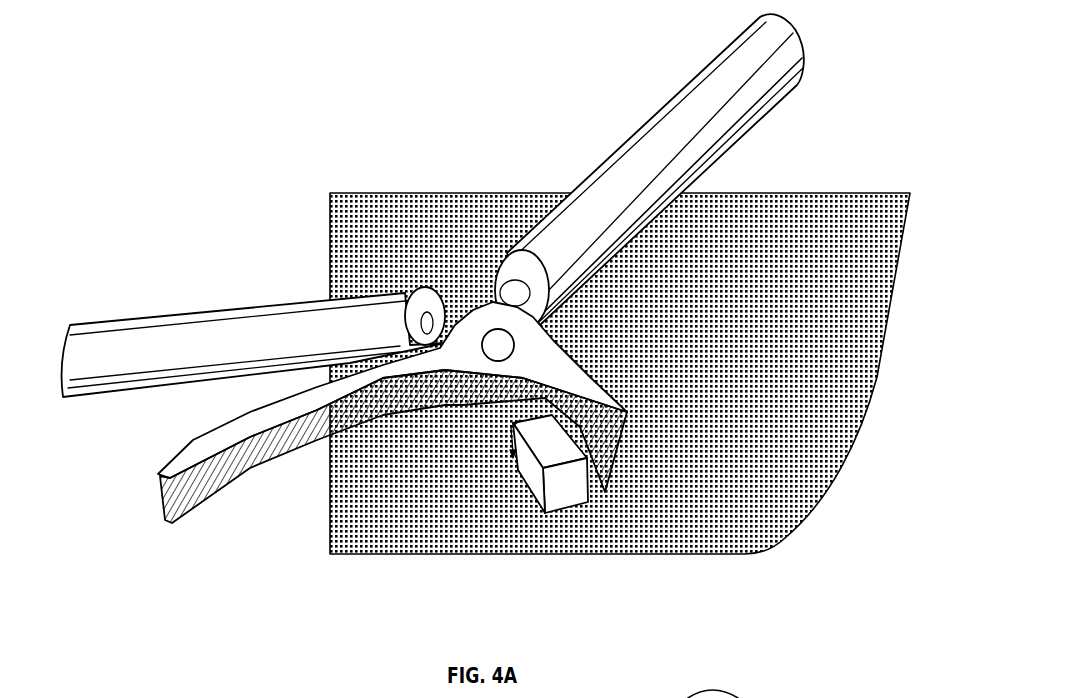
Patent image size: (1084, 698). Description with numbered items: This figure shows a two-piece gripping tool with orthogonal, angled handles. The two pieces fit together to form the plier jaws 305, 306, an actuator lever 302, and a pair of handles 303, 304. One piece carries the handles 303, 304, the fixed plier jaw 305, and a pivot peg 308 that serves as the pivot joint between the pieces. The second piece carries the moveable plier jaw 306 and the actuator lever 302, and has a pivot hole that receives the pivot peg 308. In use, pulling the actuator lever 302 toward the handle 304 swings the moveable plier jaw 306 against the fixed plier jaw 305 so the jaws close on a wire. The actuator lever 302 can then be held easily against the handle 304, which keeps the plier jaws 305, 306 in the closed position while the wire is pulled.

The actuator lever 302 is at (252, 420).
The handle 303 is at (718, 120).
The handle 304 is at (110, 365).
The fixed plier jaw 305 is at (547, 448).
The moveable plier jaw 306 is at (597, 407).
The pivot peg 308 is at (498, 347).